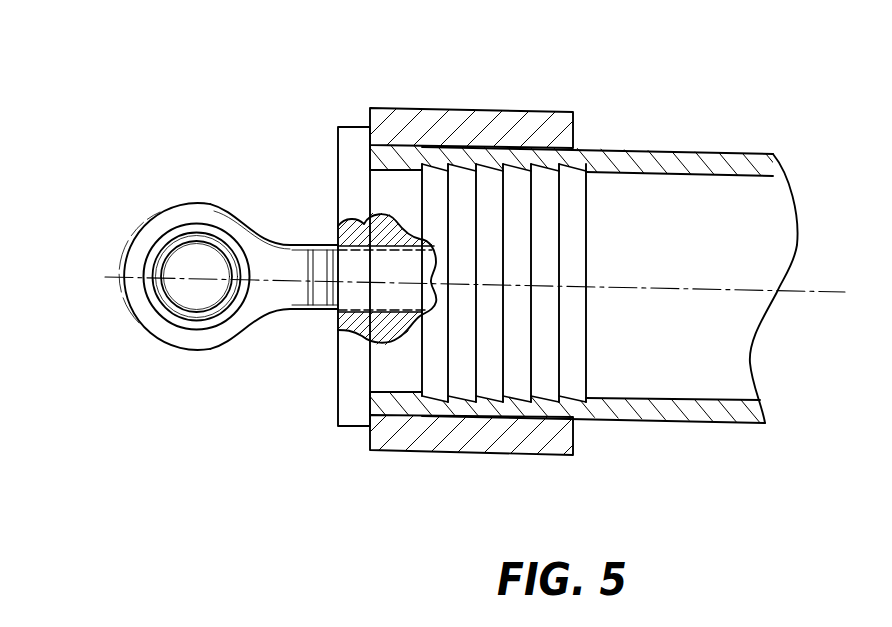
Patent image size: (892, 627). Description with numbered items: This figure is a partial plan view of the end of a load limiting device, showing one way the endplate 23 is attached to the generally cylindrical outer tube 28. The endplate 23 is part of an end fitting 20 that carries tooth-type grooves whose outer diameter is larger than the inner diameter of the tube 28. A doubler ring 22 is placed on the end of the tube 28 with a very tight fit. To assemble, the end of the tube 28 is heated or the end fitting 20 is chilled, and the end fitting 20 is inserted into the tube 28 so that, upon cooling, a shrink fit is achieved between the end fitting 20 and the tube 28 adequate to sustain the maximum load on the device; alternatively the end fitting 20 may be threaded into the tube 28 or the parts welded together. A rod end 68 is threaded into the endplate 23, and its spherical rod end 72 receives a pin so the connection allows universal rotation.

The end fitting 20 is at (430, 360).
The doubler ring 22 is at (478, 105).
The endplate 23 is at (336, 376).
The outer tube 28 is at (712, 150).
The rod end 68 is at (248, 314).
The spherical rod end 72 is at (150, 290).